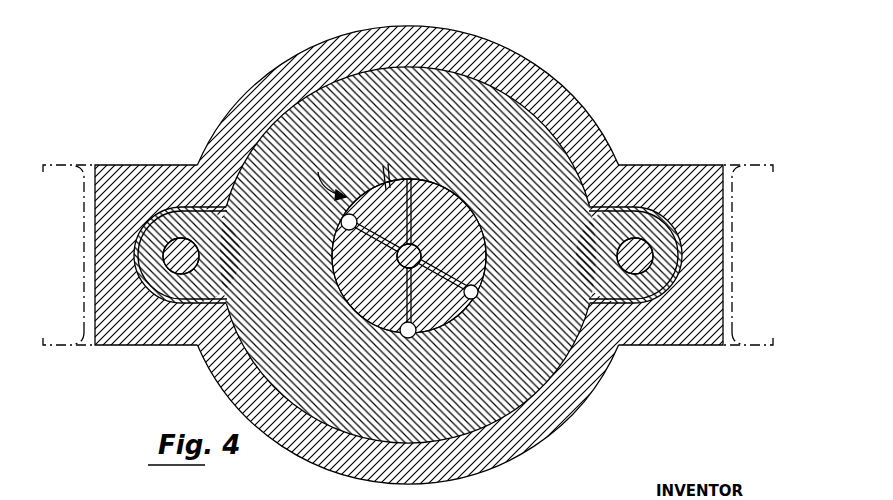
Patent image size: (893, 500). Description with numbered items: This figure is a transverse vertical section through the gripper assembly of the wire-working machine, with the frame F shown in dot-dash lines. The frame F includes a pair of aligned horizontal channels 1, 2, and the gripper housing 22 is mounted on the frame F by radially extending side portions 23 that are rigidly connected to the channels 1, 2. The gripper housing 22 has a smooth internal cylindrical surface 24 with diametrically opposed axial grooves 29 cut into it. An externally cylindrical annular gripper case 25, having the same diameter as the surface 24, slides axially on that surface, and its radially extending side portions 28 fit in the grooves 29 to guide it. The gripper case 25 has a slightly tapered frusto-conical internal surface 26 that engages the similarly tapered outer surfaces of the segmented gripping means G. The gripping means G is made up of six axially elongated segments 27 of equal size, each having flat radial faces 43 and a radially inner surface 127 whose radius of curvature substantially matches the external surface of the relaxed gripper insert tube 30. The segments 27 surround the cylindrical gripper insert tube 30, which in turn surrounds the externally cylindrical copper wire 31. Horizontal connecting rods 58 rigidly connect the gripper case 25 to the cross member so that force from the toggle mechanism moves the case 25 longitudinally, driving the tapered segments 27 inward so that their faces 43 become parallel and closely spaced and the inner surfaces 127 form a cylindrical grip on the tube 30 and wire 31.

The horizontal channel 1 is at (68, 349).
The horizontal channel 2 is at (745, 349).
The gripper housing 22 is at (522, 62).
The side portions 23 is at (665, 176).
The internal cylindrical surface 24 is at (455, 440).
The gripper case 25 is at (356, 419).
The frusto-conical internal surface 26 is at (448, 198).
The segments 27 is at (386, 178).
The side portions 28 is at (168, 222).
The axial grooves 29 is at (164, 288).
The gripper insert tube 30 is at (427, 218).
The copper wire 31 is at (392, 294).
The flat radial faces 43 is at (346, 209).
The connecting rods 58 is at (200, 253).
The radially inner surfaces 127 is at (397, 256).
The frame F is at (78, 162).
The segmented gripping means G is at (325, 173).